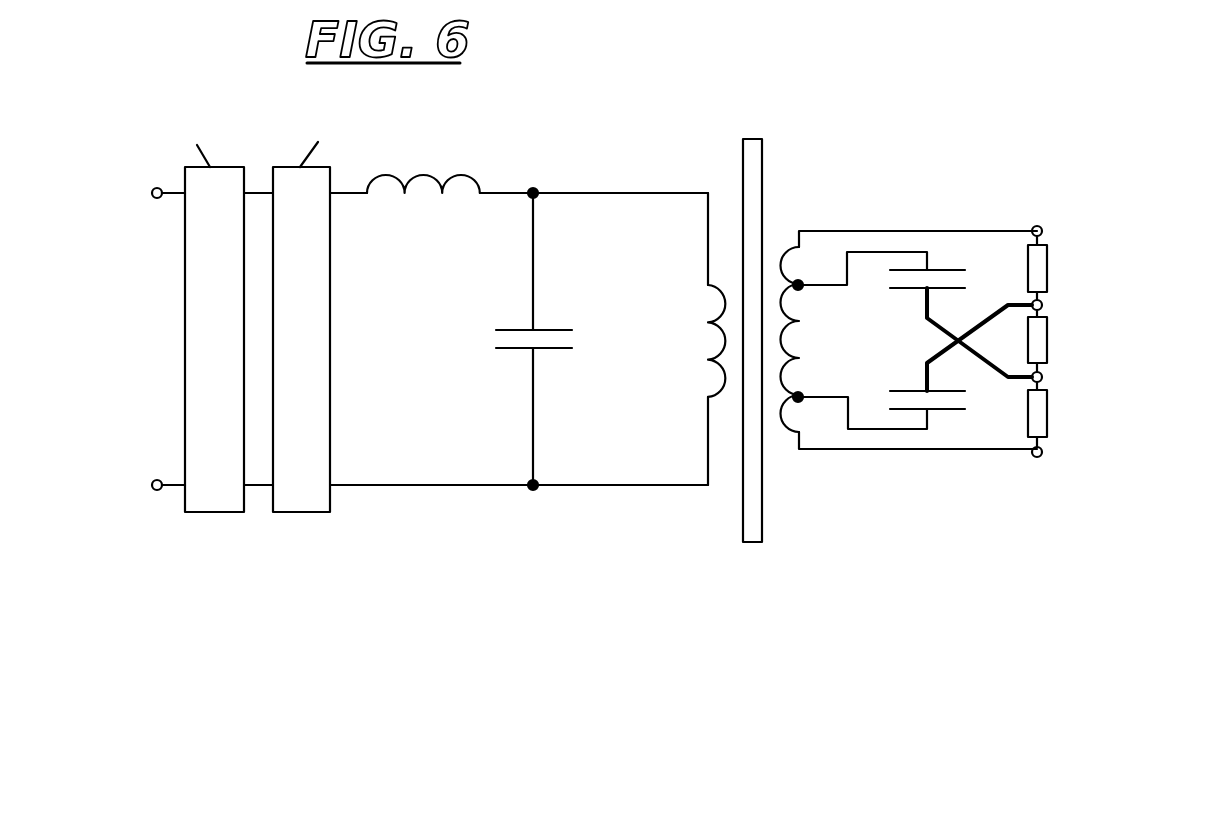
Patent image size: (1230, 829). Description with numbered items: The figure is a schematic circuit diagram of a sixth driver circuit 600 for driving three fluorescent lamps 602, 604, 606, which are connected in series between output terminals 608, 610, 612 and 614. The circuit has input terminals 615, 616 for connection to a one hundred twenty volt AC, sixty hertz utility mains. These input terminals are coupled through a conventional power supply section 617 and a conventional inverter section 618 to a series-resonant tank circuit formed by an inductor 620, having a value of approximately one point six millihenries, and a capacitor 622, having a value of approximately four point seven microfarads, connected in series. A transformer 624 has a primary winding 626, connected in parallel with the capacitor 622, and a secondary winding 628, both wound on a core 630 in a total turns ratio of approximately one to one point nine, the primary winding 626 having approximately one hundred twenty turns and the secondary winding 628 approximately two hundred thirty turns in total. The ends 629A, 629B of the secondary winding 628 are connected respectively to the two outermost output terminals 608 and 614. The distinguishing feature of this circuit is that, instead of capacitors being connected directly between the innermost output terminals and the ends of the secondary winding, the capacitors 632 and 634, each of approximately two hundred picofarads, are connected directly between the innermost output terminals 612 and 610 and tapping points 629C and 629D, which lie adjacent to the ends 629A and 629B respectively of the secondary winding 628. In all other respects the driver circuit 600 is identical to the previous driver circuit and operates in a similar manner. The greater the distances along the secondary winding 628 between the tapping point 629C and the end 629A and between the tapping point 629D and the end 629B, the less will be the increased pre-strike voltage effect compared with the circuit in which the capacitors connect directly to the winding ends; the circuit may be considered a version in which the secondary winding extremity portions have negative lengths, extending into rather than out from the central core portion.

The driver circuit 600 is at (350, 613).
The fluorescent lamp 602 is at (1047, 267).
The fluorescent lamp 604 is at (1047, 344).
The fluorescent lamp 606 is at (1047, 413).
The output terminal 608 is at (1043, 228).
The output terminal 610 is at (1043, 302).
The output terminal 612 is at (1043, 380).
The output terminal 614 is at (1043, 455).
The input terminal 615 is at (153, 200).
The input terminal 616 is at (153, 480).
The power supply section 617 is at (233, 346).
The inverter section 618 is at (320, 346).
The inductor 620 is at (405, 196).
The capacitor 622 is at (517, 350).
The transformer 624 is at (752, 570).
The primary winding 626 is at (712, 322).
The secondary winding 628 is at (787, 175).
The end of secondary winding 629A is at (799, 231).
The end of secondary winding 629B is at (802, 452).
The tapping point 629C is at (798, 285).
The tapping point 629D is at (798, 397).
The core 630 is at (752, 138).
The capacitor 632 is at (953, 270).
The capacitor 634 is at (943, 412).